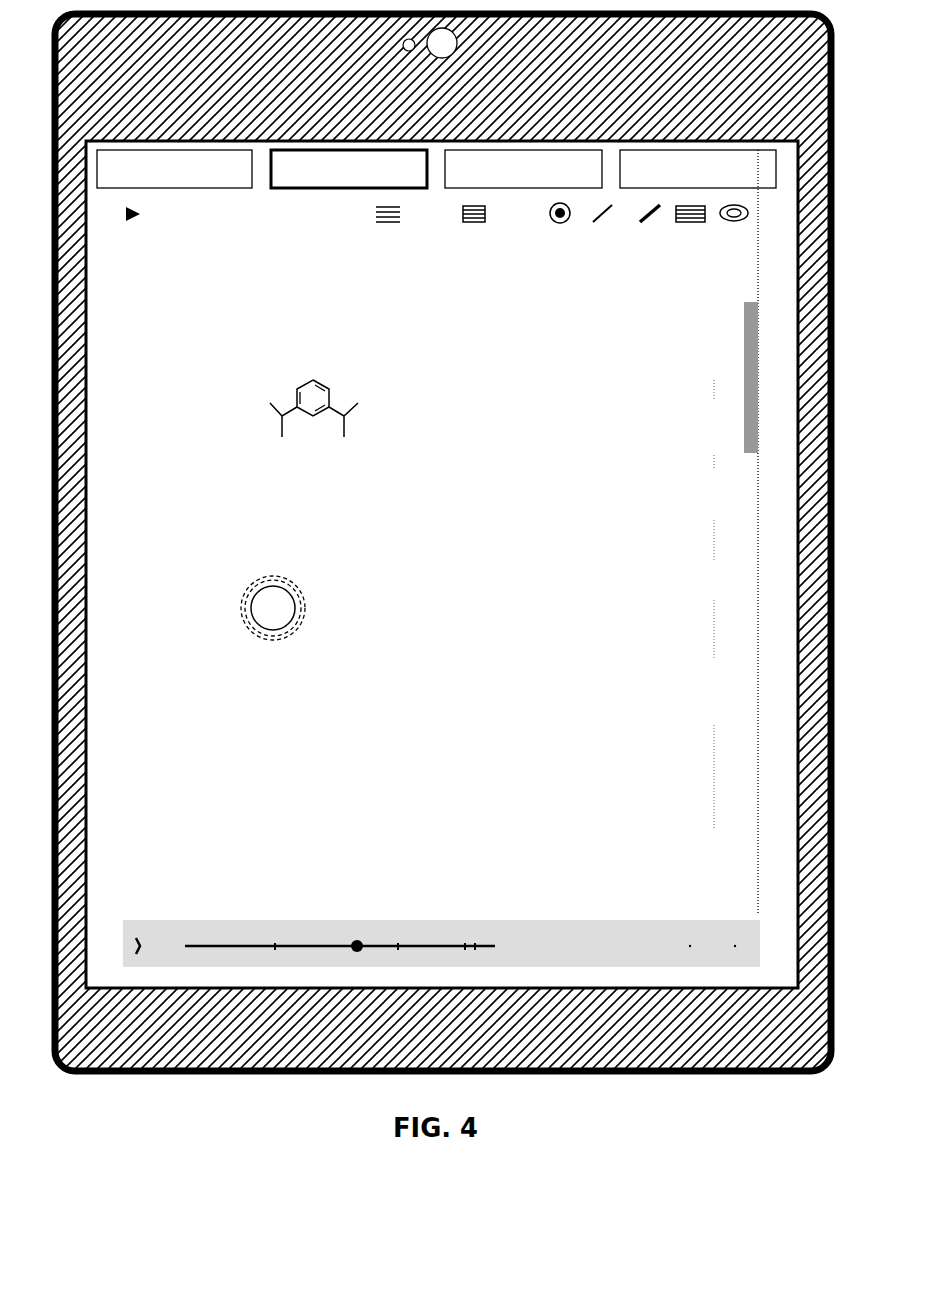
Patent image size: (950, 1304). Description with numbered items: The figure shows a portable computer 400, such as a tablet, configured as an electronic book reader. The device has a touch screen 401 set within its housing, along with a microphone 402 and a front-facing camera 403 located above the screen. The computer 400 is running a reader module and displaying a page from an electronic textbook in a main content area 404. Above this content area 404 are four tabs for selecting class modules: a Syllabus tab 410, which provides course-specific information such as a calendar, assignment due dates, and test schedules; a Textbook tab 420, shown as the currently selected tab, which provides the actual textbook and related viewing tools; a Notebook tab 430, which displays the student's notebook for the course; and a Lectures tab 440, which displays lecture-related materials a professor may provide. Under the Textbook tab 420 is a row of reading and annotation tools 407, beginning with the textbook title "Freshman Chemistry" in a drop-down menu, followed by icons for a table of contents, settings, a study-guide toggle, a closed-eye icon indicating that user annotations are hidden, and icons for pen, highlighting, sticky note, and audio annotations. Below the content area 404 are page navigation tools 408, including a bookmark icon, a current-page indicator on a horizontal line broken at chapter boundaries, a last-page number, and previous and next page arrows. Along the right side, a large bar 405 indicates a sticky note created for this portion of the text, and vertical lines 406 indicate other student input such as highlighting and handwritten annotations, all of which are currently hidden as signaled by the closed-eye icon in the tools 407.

The portable computer 400 is at (443, 570).
The touch screen 401 is at (443, 542).
The microphone 402 is at (394, 59).
The front-facing camera 403 is at (458, 53).
The main content area 404 is at (420, 562).
The large bar 405 is at (730, 370).
The vertical lines 406 is at (708, 532).
The reading and annotation tools 407 is at (437, 222).
The page navigation tools 408 is at (441, 931).
The Syllabus tab 410 is at (174, 169).
The Textbook tab 420 is at (349, 169).
The Notebook tab 430 is at (523, 169).
The Lectures tab 440 is at (698, 169).